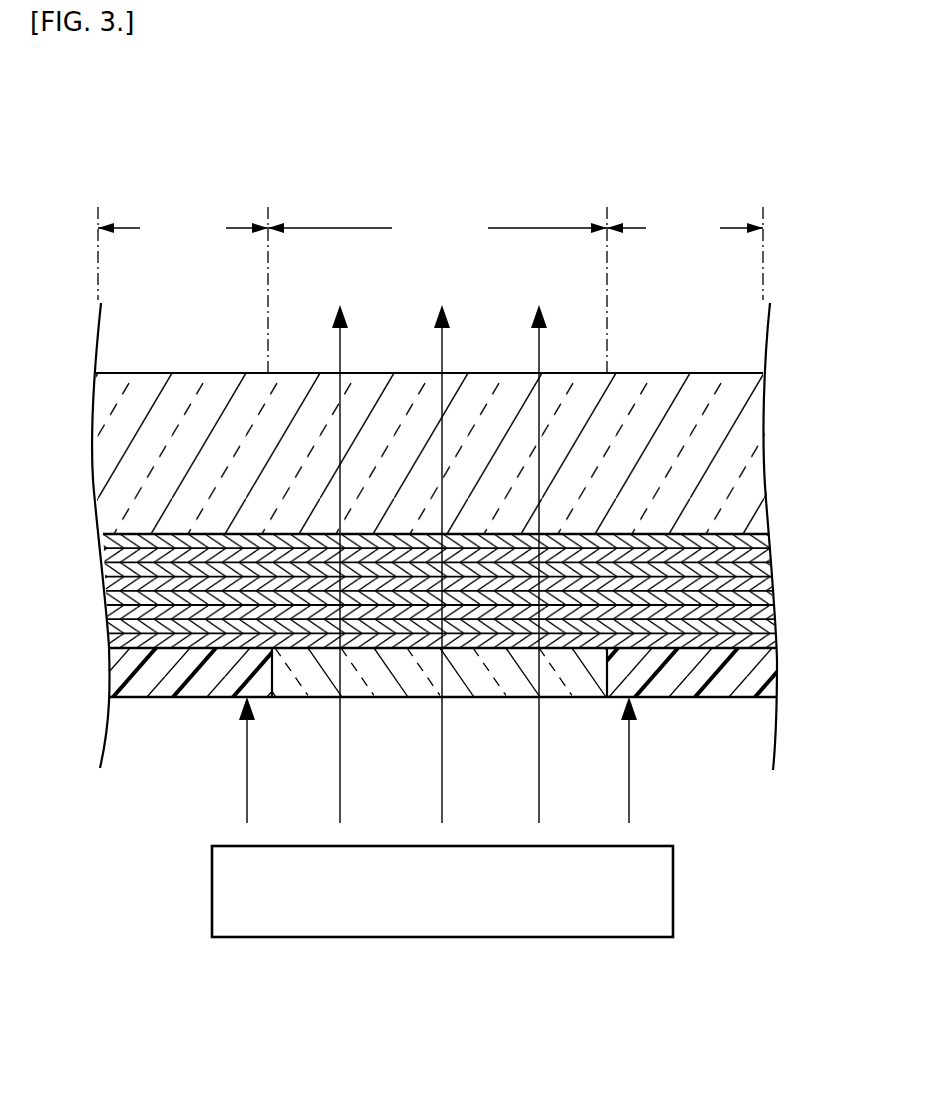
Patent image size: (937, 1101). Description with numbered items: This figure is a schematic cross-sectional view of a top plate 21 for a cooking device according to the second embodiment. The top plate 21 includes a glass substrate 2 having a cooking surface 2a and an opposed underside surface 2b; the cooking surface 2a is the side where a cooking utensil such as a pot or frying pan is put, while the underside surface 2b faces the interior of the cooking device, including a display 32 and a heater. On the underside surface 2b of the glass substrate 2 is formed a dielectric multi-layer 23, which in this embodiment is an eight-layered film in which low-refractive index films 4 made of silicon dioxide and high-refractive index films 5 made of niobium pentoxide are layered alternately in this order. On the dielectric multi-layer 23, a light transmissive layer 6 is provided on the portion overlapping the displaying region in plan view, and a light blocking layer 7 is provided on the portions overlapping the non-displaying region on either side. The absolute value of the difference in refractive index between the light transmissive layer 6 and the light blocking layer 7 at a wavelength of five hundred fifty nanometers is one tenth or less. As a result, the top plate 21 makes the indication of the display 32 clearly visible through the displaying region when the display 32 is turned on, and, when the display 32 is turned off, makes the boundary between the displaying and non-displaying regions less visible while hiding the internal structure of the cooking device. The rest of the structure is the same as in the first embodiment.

The top plate for a cooking device 21 is at (132, 136).
The glass substrate 2 is at (735, 472).
The cooking surface 2a is at (190, 373).
The underside surface 2b is at (690, 533).
The dielectric multi-layer 23 is at (503, 597).
The low-refractive index film 4 is at (772, 541).
The high-refractive index film 5 is at (773, 555).
The light transmissive layer 6 is at (298, 698).
The light blocking layer 7 is at (206, 698).
The display 32 is at (647, 897).